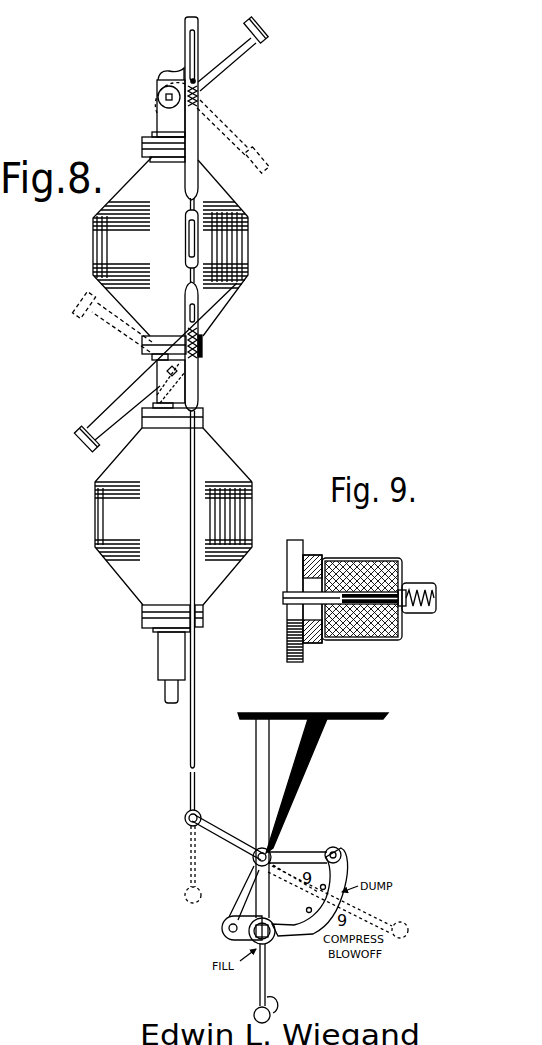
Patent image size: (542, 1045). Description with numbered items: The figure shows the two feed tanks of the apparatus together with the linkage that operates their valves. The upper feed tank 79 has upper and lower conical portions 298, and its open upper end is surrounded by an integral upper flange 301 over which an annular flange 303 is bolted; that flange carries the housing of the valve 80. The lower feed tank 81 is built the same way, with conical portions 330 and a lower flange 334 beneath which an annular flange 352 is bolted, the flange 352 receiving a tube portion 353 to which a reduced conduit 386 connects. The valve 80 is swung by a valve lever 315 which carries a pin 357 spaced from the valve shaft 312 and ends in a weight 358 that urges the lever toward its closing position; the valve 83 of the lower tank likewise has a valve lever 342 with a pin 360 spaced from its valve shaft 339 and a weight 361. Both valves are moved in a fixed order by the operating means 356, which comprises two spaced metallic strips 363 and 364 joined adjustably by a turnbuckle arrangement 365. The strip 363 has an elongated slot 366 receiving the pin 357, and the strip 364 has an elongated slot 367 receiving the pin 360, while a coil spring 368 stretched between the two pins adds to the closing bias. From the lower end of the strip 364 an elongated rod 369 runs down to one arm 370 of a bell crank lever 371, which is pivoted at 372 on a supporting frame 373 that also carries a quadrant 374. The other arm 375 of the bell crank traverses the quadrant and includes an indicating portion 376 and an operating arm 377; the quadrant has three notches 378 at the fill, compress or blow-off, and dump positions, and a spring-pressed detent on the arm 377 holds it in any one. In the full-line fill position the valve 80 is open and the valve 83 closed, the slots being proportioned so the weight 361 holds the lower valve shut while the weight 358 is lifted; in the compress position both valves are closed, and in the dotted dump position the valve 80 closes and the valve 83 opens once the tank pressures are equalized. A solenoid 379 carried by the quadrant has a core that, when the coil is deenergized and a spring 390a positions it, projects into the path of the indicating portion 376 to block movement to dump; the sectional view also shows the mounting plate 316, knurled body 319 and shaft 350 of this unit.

In FIG. 8, the elongated metallic strip 363 is at (185, 22).
In FIG. 8, the elongated slot 366 is at (194, 45).
In FIG. 8, the weight 358 is at (267, 31).
In FIG. 8, the valve lever 315 is at (238, 54).
In FIG. 8, the pin 357 is at (199, 83).
In FIG. 8, the valve shaft 312 is at (159, 97).
In FIG. 8, the valve 80 is at (156, 107).
In FIG. 8, the annular flange 303 is at (142, 144).
In FIG. 8, the upper flange 301 is at (158, 159).
In FIG. 8, the conical portion 298 is at (222, 197).
In FIG. 8, the upper feed tank 79 is at (92, 247).
In FIG. 8, the turnbuckle arrangement 365 is at (199, 243).
In FIG. 8, the elongated slot 367 is at (196, 315).
In FIG. 8, the coil spring 368 is at (198, 332).
In FIG. 8, the pin 360 is at (202, 355).
In FIG. 8, the elongated metallic strip 364 is at (198, 372).
In FIG. 8, the valve shaft 339 is at (157, 369).
In FIG. 8, the valve 83 is at (140, 379).
In FIG. 8, the valve lever 342 is at (97, 421).
In FIG. 8, the weight 361 is at (78, 432).
In FIG. 8, the conical portion 330 is at (230, 458).
In FIG. 8, the lower feed tank 81 is at (92, 512).
In FIG. 8, the lower flange 334 is at (142, 613).
In FIG. 8, the annular flange 352 is at (148, 624).
In FIG. 8, the tube portion 353 is at (158, 664).
In FIG. 8, the conduit 386 is at (165, 694).
In FIG. 8, the elongated rod 369 is at (191, 738).
In FIG. 8, the operating means 356 is at (183, 801).
In FIG. 8, the arm 370 is at (218, 827).
In FIG. 8, the bell crank lever 371 is at (230, 849).
In FIG. 8, the supporting frame 373 is at (302, 800).
In FIG. 8, the pivot 372 is at (272, 852).
In FIG. 8, the quadrant 374 is at (341, 852).
In FIG. 8, the solenoid 379 is at (306, 883).
In FIG. 8, the arm 375 is at (262, 898).
In FIG. 8, the indicating portion 376 is at (250, 933).
In FIG. 8, the notches 378 is at (343, 894).
In FIG. 8, the operating arm 377 is at (268, 980).
In FIG. 9, the plate 316 is at (296, 541).
In FIG. 9, the knurled knob 319 is at (366, 570).
In FIG. 9, the spring housing 390a is at (418, 582).
In FIG. 9, the shaft 350 is at (283, 601).